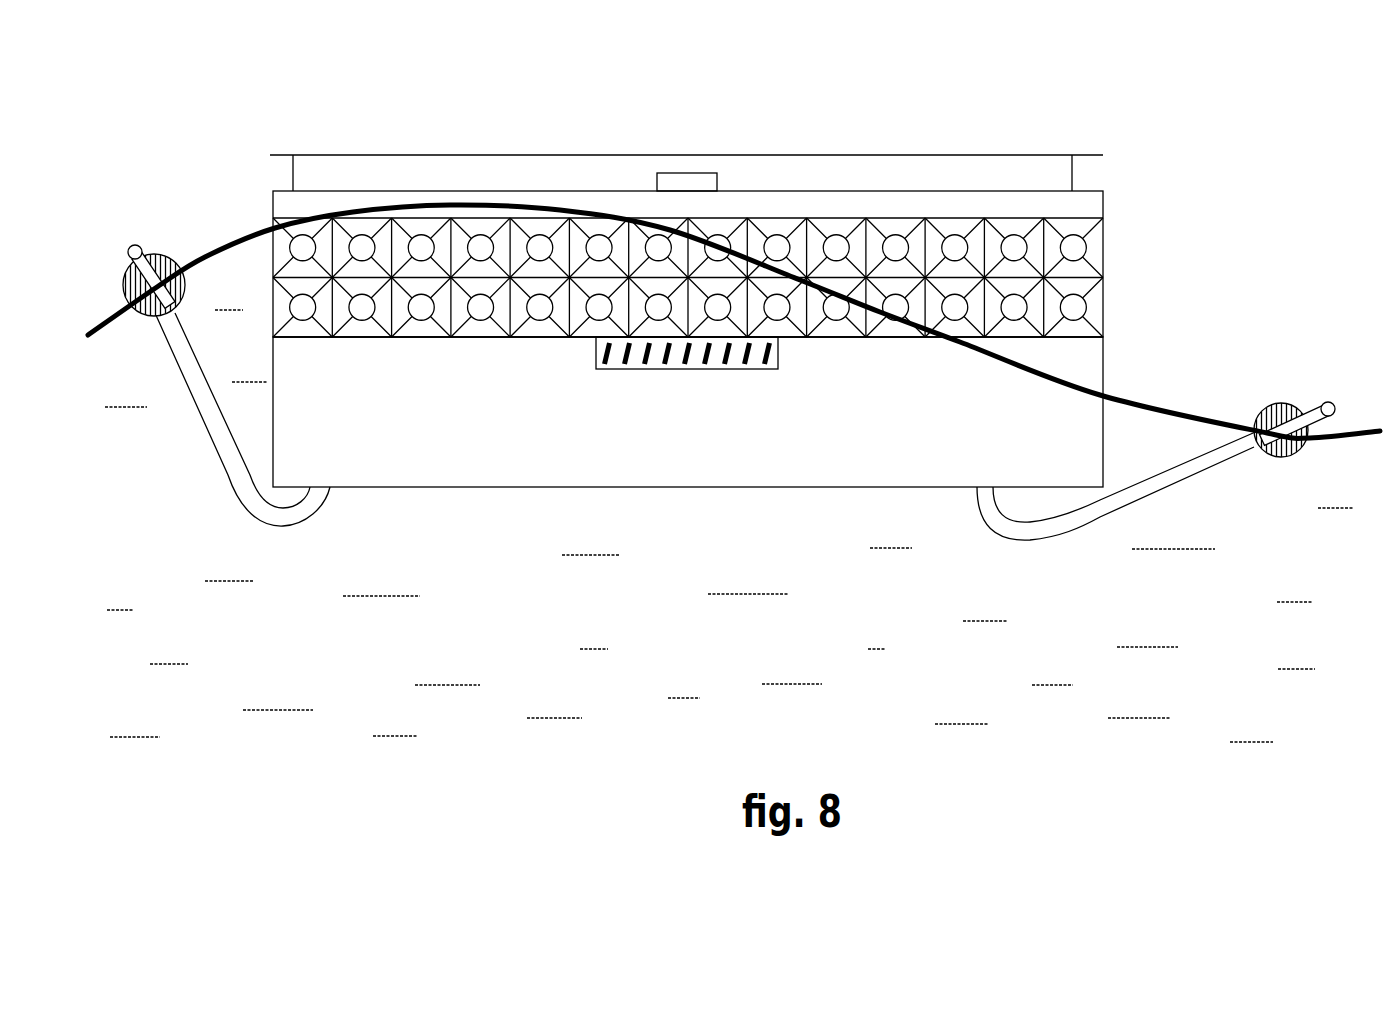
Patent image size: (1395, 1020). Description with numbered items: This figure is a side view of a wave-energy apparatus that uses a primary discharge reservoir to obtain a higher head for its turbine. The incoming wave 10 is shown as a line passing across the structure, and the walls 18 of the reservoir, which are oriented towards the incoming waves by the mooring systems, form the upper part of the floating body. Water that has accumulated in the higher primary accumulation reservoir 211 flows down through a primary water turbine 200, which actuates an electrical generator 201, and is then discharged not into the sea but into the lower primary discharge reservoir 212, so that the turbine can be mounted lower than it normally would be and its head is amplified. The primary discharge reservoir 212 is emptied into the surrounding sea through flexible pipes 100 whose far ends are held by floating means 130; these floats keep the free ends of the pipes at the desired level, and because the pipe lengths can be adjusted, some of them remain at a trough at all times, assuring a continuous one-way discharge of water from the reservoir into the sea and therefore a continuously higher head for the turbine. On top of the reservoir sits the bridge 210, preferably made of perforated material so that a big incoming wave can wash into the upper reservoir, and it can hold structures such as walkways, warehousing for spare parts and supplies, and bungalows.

The incoming wave 10 is at (217, 248).
The wall 18 is at (597, 232).
The flexible pipe 100 is at (218, 452).
The floating means 130 is at (157, 256).
The water turbine 200 is at (780, 360).
The electrical generator 201 is at (683, 185).
The bridge 210 is at (483, 155).
The primary accumulation reservoir 211 is at (1095, 270).
The primary discharge reservoir 212 is at (510, 450).